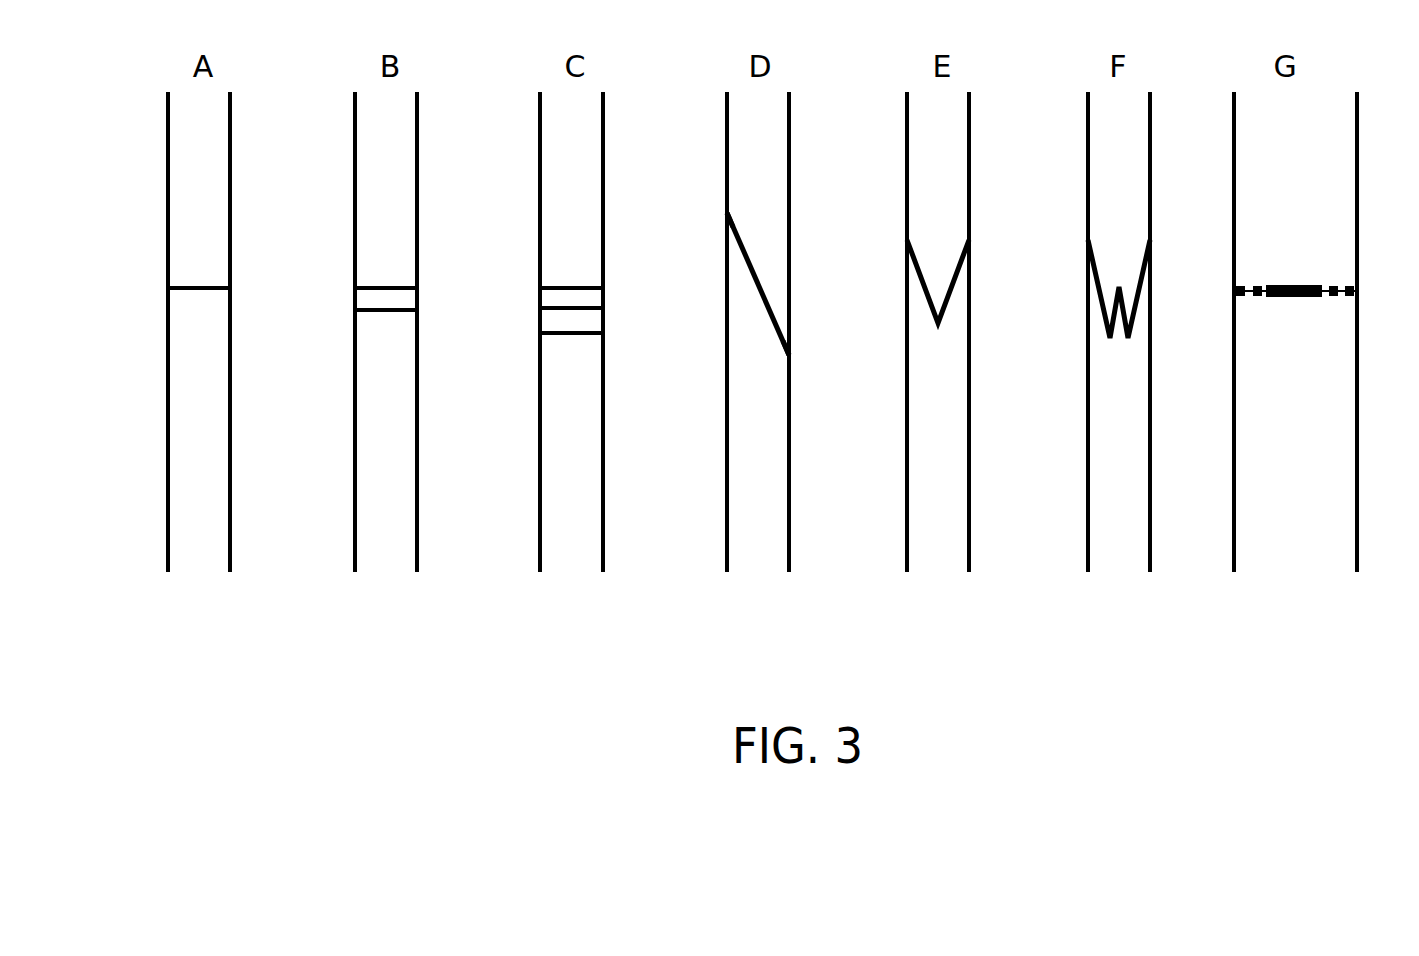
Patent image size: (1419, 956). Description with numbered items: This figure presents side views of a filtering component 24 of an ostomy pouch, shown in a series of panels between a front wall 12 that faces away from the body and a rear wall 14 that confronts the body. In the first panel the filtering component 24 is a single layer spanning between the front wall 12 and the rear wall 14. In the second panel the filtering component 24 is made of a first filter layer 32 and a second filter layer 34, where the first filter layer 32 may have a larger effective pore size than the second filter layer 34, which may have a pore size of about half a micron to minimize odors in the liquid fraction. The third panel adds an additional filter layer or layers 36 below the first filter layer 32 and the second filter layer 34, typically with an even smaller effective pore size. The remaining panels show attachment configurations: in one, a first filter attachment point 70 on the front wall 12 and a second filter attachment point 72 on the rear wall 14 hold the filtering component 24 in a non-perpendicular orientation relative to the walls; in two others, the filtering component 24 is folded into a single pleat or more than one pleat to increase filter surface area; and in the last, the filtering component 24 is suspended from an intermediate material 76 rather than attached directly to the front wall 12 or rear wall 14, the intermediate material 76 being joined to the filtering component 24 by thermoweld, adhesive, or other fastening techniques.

The front wall 12 is at (685, 362).
The rear wall 14 is at (820, 355).
The filtering component 24 is at (788, 287).
The first filter layer 32 is at (502, 246).
The second filter layer 34 is at (474, 323).
The additional filter layer or layers 36 is at (600, 369).
The first filter attachment point 70 is at (705, 187).
The second filter attachment point 72 is at (824, 338).
The intermediate material 76 is at (1301, 335).